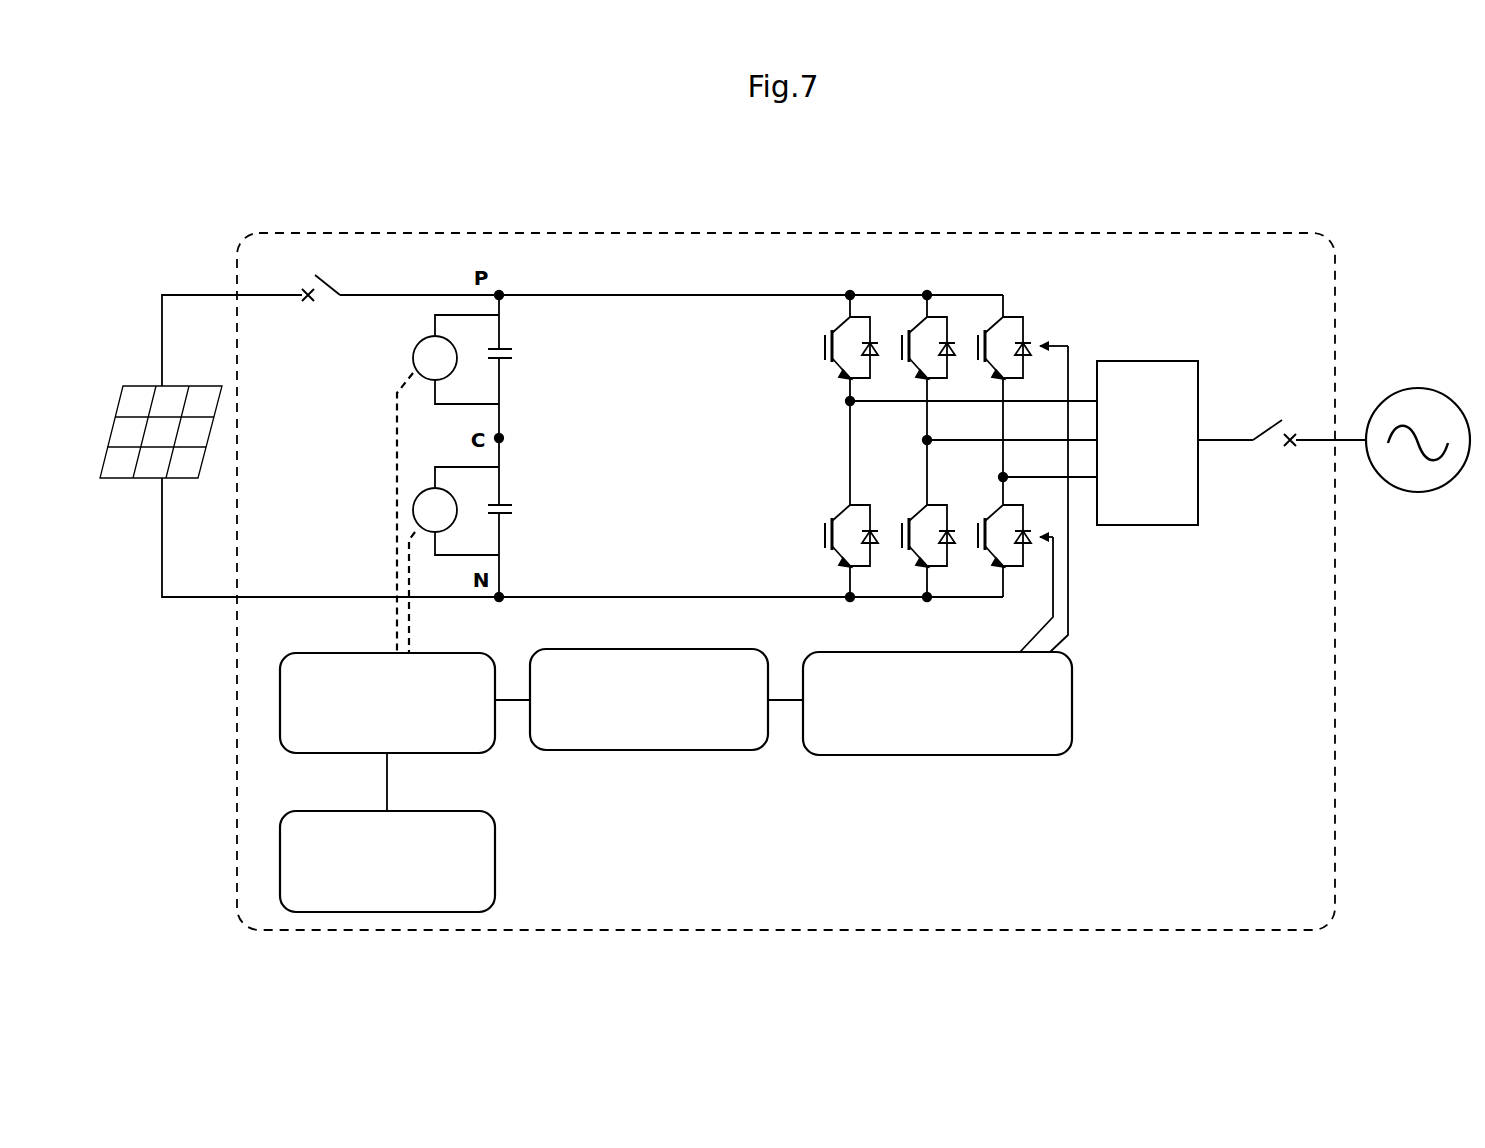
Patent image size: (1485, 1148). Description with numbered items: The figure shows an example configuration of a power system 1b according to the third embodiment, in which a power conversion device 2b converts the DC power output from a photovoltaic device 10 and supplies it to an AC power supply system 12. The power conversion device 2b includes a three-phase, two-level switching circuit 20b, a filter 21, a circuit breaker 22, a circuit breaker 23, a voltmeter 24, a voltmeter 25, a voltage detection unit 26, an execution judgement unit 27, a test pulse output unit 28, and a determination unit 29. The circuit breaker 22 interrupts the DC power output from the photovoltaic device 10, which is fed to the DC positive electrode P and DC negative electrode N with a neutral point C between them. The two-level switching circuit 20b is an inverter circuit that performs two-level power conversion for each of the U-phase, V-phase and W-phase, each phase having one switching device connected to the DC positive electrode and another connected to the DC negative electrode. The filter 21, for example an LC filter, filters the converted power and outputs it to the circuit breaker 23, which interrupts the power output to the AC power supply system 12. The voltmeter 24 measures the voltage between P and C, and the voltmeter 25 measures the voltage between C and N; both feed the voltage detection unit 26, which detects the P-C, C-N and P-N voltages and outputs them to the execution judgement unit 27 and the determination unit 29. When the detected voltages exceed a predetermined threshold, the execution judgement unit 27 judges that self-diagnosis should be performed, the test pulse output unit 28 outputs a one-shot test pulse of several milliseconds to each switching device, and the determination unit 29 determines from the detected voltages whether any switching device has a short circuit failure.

The power system 1b is at (1388, 294).
The power conversion device 2b is at (775, 233).
The photovoltaic device 10 is at (184, 387).
The AC power supply system 12 is at (1424, 390).
The two-level switching circuit 20b is at (1050, 312).
The filter 21 is at (1154, 362).
The circuit breaker 22 is at (326, 292).
The circuit breaker 23 is at (1268, 432).
The voltmeter 24 is at (414, 358).
The voltmeter 25 is at (455, 516).
The voltage detection unit 26 is at (342, 652).
The execution judgement unit 27 is at (642, 751).
The test pulse output unit 28 is at (955, 755).
The determination unit 29 is at (455, 811).